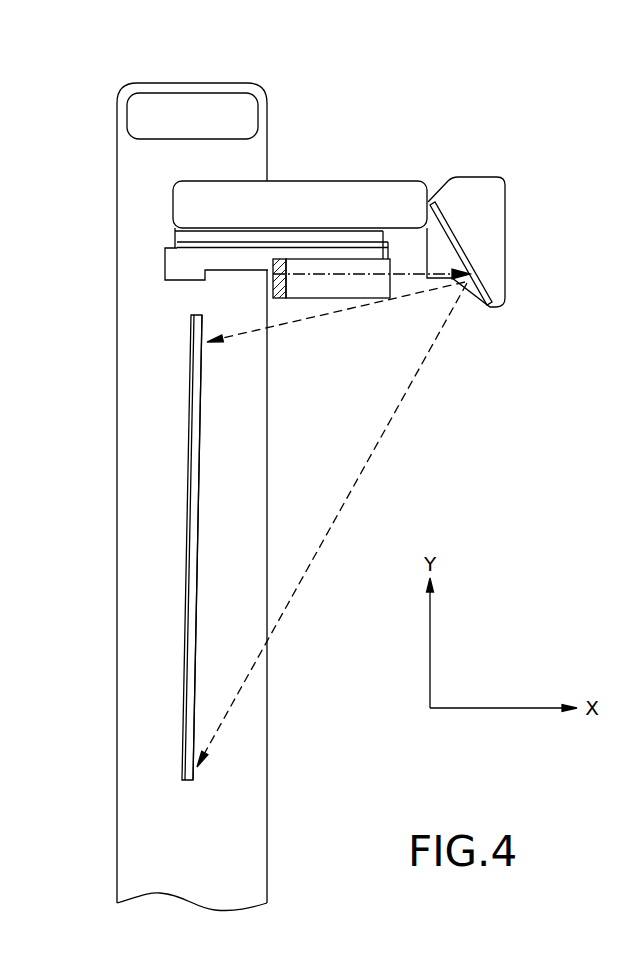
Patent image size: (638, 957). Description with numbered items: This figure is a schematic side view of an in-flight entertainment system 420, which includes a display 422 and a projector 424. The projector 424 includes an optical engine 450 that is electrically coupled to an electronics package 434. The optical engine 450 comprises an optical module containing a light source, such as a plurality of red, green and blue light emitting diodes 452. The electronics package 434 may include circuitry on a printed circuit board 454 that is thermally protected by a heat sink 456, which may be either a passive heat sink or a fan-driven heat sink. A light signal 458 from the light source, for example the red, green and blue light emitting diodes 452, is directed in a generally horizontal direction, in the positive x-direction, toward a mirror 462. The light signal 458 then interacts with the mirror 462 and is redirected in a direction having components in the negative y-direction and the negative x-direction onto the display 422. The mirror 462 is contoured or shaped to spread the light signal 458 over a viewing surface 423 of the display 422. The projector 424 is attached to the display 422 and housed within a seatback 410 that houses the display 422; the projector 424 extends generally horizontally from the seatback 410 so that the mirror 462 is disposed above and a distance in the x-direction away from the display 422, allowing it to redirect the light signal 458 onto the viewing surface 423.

The seatback 410 is at (117, 690).
The in-flight entertainment system 420 is at (428, 112).
The display 422 is at (187, 568).
The viewing surface 423 is at (199, 480).
The projector 424 is at (483, 176).
The electronics package 434 is at (177, 262).
The optical engine 450 is at (323, 284).
The red, green and blue light emitting diodes 452 is at (268, 285).
The printed circuit board 454 is at (388, 248).
The heat sink 456 is at (177, 233).
The light signal 458 is at (370, 275).
The mirror 462 is at (455, 234).